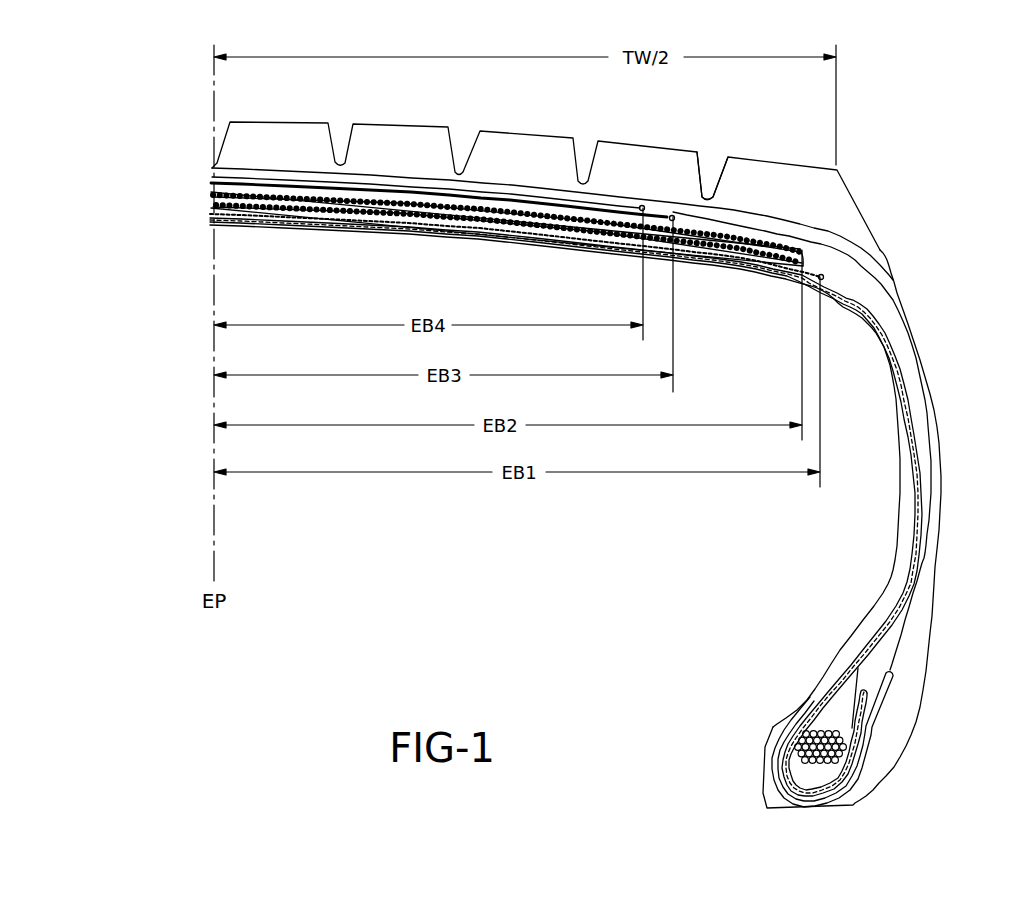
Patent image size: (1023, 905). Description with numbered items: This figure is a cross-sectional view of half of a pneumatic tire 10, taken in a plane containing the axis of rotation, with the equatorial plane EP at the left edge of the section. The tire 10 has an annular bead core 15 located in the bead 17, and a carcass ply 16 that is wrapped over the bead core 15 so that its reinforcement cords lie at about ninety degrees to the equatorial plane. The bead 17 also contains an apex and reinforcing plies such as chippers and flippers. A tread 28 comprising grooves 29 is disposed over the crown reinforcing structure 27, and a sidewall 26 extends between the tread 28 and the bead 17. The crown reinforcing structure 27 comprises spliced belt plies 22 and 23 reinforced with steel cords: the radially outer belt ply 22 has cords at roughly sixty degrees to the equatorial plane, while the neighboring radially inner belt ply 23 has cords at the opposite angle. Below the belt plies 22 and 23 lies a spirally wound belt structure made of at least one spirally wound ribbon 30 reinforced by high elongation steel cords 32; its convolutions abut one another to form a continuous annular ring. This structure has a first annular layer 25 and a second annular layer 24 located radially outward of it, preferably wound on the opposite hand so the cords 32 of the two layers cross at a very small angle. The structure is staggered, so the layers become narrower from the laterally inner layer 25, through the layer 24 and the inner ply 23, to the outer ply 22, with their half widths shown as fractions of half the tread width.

The pneumatic tire 10 is at (941, 148).
The annular bead core 15 is at (822, 756).
The carcass ply 16 is at (905, 557).
The bead 17 is at (781, 701).
The radially outer belt ply 22 is at (298, 185).
The radially inner belt ply 23 is at (400, 203).
The second annular layer 24 is at (495, 214).
The first annular layer 25 is at (597, 226).
The sidewall 26 is at (937, 493).
The crown reinforcing structure 27 is at (383, 229).
The tread 28 is at (501, 150).
The groove 29 is at (710, 176).
The spirally wound ribbon 30 is at (797, 238).
The steel cord 32 is at (244, 199).